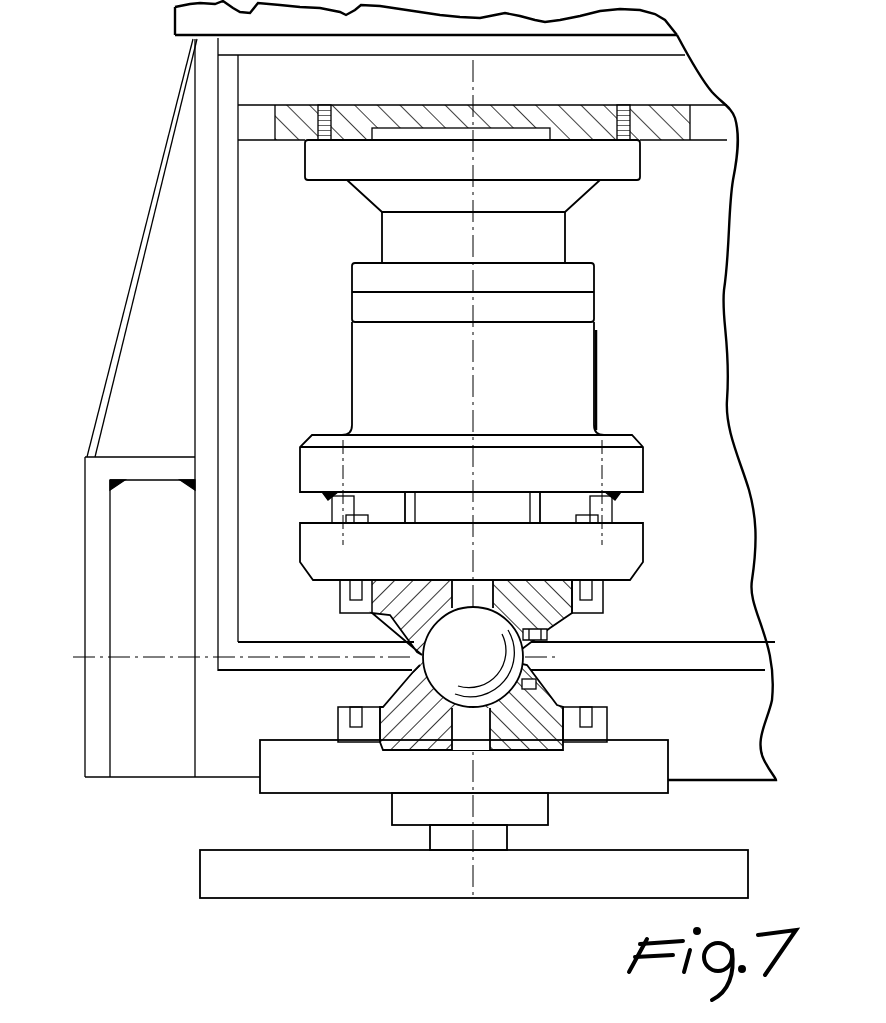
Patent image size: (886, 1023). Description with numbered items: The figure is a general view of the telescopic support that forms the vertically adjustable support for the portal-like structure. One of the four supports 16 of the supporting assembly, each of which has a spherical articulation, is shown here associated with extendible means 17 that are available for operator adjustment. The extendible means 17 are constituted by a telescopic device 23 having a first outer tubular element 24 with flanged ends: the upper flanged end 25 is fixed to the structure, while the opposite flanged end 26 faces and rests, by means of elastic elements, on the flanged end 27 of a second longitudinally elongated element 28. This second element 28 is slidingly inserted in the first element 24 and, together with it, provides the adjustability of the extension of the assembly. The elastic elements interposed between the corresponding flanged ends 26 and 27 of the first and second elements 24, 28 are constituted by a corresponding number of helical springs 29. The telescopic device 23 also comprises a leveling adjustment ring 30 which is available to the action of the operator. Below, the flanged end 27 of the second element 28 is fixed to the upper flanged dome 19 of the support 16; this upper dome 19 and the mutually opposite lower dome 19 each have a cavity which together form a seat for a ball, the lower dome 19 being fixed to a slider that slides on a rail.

The support 16 is at (393, 651).
The extendible means 17 is at (327, 353).
The flanged dome 19 is at (557, 622).
The telescopic device 23 is at (605, 367).
The first outer tubular element 24 is at (597, 405).
The flanged end 25 is at (645, 182).
The flanged end 26 is at (645, 490).
The flanged end 27 is at (640, 578).
The second longitudinally elongated element 28 is at (495, 508).
The helical spring 29 is at (350, 495).
The leveling adjustment ring 30 is at (594, 308).